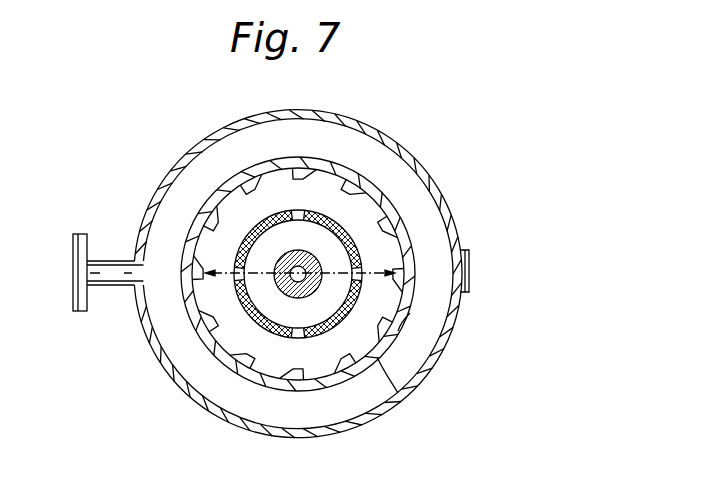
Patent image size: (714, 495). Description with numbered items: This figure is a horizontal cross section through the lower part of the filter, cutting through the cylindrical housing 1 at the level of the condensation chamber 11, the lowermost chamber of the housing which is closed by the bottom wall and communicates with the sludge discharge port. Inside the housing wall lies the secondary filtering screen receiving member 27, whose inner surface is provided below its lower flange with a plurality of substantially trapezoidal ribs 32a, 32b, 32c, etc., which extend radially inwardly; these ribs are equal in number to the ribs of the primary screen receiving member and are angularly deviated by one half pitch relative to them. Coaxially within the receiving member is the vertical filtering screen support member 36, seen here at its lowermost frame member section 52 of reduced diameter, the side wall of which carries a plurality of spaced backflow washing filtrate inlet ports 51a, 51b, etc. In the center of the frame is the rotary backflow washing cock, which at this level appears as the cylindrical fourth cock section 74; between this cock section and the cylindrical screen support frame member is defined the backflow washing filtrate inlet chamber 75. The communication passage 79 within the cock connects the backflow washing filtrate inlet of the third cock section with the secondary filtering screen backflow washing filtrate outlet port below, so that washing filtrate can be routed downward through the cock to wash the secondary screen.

The housing 1 is at (384, 418).
The condensation chamber 11 is at (416, 356).
The secondary filtering screen receiving member 27 is at (399, 404).
The rib 32a is at (410, 313).
The rib 32b is at (392, 266).
The rib 32c is at (407, 217).
The filtering screen support member 36 is at (537, 313).
The backflow washing filtrate inlet port 51a is at (363, 267).
The backflow washing filtrate inlet port 51b is at (341, 228).
The lowermost frame member section 52 is at (385, 273).
The fourth cock section 74 is at (277, 265).
The backflow washing filtrate inlet chamber 75 is at (295, 310).
The communication passage 79 is at (282, 282).